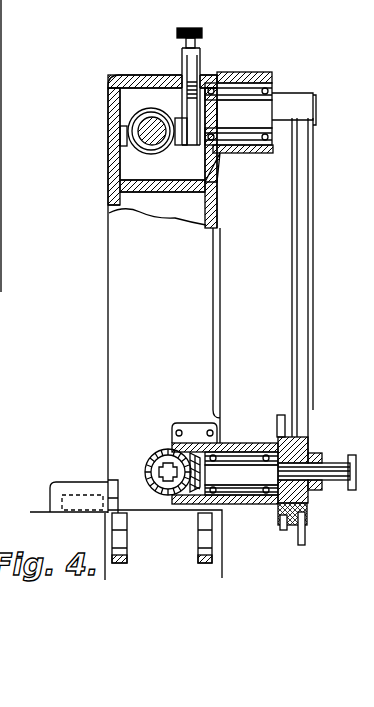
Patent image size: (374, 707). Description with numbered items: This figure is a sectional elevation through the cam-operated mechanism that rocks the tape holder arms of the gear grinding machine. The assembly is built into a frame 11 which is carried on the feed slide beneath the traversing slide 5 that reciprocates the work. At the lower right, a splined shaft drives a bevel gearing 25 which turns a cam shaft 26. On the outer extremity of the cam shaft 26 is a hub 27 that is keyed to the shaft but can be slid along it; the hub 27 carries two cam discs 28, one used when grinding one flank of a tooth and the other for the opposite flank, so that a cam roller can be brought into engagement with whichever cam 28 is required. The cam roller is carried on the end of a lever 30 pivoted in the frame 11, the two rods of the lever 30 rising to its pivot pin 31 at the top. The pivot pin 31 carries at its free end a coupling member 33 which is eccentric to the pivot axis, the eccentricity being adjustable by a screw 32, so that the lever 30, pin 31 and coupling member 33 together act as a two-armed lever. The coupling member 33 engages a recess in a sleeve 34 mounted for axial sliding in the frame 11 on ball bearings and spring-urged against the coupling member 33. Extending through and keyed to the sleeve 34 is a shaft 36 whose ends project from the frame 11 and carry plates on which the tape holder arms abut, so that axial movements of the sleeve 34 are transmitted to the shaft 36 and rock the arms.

The traversing slide 5 is at (2, 190).
The frame 11 is at (108, 268).
The bevel gearing 25 is at (156, 455).
The cam shaft 26 is at (225, 463).
The hub 27 is at (308, 455).
The cam discs 28 is at (284, 531).
The lever 30 is at (297, 273).
The pivot pin 31 is at (260, 127).
The screw 32 is at (200, 45).
The coupling member 33 is at (180, 147).
The sleeve 34 is at (142, 151).
The shaft 36 is at (152, 110).